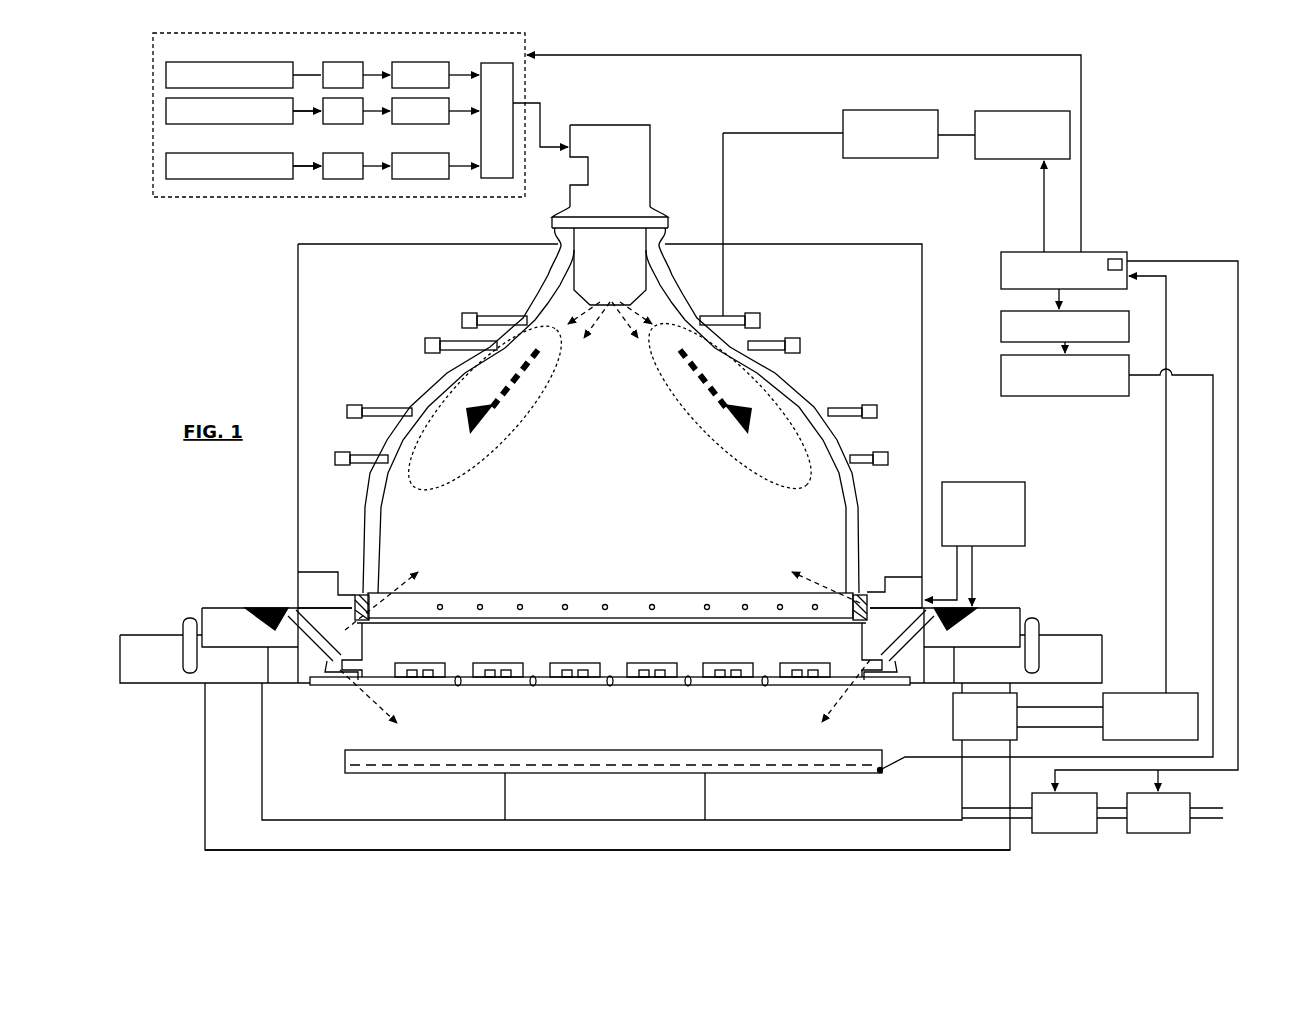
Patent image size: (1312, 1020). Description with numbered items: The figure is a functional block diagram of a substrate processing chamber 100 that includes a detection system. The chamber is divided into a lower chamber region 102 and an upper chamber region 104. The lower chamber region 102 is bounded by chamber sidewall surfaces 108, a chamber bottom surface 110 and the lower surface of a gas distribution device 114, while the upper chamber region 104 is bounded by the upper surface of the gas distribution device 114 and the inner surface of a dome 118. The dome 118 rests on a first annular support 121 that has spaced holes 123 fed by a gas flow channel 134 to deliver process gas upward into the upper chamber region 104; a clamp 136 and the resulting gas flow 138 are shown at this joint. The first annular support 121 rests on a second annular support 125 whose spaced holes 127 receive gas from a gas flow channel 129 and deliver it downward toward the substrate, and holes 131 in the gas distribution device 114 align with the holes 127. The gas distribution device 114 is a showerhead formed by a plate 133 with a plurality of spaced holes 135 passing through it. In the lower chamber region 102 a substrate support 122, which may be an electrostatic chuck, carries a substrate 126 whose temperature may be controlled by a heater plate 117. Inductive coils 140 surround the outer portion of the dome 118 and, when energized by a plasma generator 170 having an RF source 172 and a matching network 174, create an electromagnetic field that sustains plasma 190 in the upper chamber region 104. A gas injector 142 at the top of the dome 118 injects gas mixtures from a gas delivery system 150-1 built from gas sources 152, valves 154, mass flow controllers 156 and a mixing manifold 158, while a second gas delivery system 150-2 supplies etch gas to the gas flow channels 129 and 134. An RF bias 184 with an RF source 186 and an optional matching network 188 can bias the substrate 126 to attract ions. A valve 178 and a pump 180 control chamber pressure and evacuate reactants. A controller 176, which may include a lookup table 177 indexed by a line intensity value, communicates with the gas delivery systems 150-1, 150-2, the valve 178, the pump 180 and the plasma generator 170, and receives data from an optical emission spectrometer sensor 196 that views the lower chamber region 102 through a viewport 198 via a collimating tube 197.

The substrate processing chamber 100 is at (1172, 130).
The lower chamber region 102 is at (316, 724).
The upper chamber region 104 is at (587, 410).
The chamber sidewall surfaces 108 is at (262, 758).
The chamber bottom surface 110 is at (806, 820).
The gas distribution device 114 is at (610, 679).
The heater plate 117 is at (538, 773).
The dome 118 is at (390, 492).
The first annular support 121 is at (611, 584).
The substrate support 122 is at (418, 773).
The spaced holes 123 is at (593, 590).
The second annular support 125 is at (611, 647).
The substrate 126 is at (779, 594).
The spaced holes 127 is at (918, 690).
The gas flow channel 129 is at (292, 606).
The holes 131 is at (346, 700).
The plate 133 is at (625, 687).
The gas flow channel 134 is at (862, 592).
The spaced holes 135 is at (683, 687).
The clamp 136 is at (853, 620).
The gas flow 138 is at (816, 553).
The inductive coils 140 is at (420, 345).
The gas injector 142 is at (620, 308).
The gas delivery system 150-1 is at (376, 152).
The gas delivery system 150-2 is at (990, 482).
The gas sources 152 is at (213, 184).
The valves 154 is at (335, 184).
The mass flow controllers 156 is at (416, 184).
The mixing manifold 158 is at (527, 64).
The plasma generator 170 is at (896, 123).
The RF source 172 is at (990, 159).
The matching network 174 is at (895, 158).
The controller 176 is at (882, 423).
The lookup table 177 is at (1116, 258).
The valve 178 is at (1062, 833).
The pump 180 is at (1170, 833).
The RF bias 184 is at (1032, 328).
The RF source 186 is at (1001, 324).
The matching network 188 is at (1001, 370).
The plasma 190 is at (712, 440).
The optical emission spectrometer sensor 196 is at (1154, 717).
The collimating tube 197 is at (1040, 727).
The viewport 198 is at (953, 742).